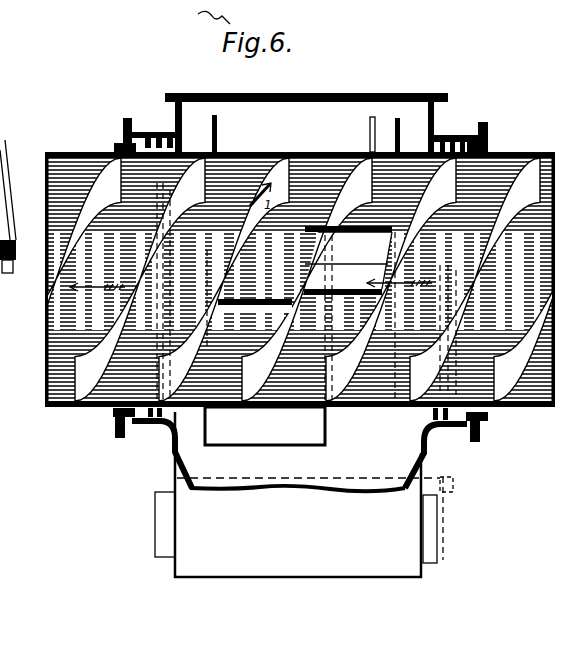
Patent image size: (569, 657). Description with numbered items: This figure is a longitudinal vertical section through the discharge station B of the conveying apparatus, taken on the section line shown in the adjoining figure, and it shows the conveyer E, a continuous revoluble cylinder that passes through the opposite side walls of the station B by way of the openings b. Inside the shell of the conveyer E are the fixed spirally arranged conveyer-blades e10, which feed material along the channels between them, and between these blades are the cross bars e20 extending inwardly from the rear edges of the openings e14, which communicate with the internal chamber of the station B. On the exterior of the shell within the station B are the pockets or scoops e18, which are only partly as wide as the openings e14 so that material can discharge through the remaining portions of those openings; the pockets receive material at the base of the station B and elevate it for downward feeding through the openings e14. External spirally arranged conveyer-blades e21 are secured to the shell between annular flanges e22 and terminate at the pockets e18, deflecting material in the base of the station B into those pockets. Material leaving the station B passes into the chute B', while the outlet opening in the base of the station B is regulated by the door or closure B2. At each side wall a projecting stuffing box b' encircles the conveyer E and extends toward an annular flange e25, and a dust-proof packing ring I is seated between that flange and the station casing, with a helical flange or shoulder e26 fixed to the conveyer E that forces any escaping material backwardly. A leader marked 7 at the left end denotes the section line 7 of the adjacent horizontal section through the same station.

The conveyer E is at (515, 158).
The conveyer-blades e10 is at (284, 279).
The openings e14 is at (361, 270).
The pockets or scoops e18 is at (259, 446).
The cross bars e20 is at (343, 295).
The external conveyer-blades e21 is at (330, 156).
The annular flanges e22 is at (214, 115).
The annular flanges e25 is at (127, 120).
The helical flanges or shoulders e26 is at (162, 133).
The opening b is at (299, 309).
The stuffing box b' is at (299, 287).
The station B is at (306, 112).
The chute B' is at (304, 512).
The door or closure B2 is at (295, 491).
The packing rings I is at (128, 142).
The inlet piece 7 is at (0, 284).